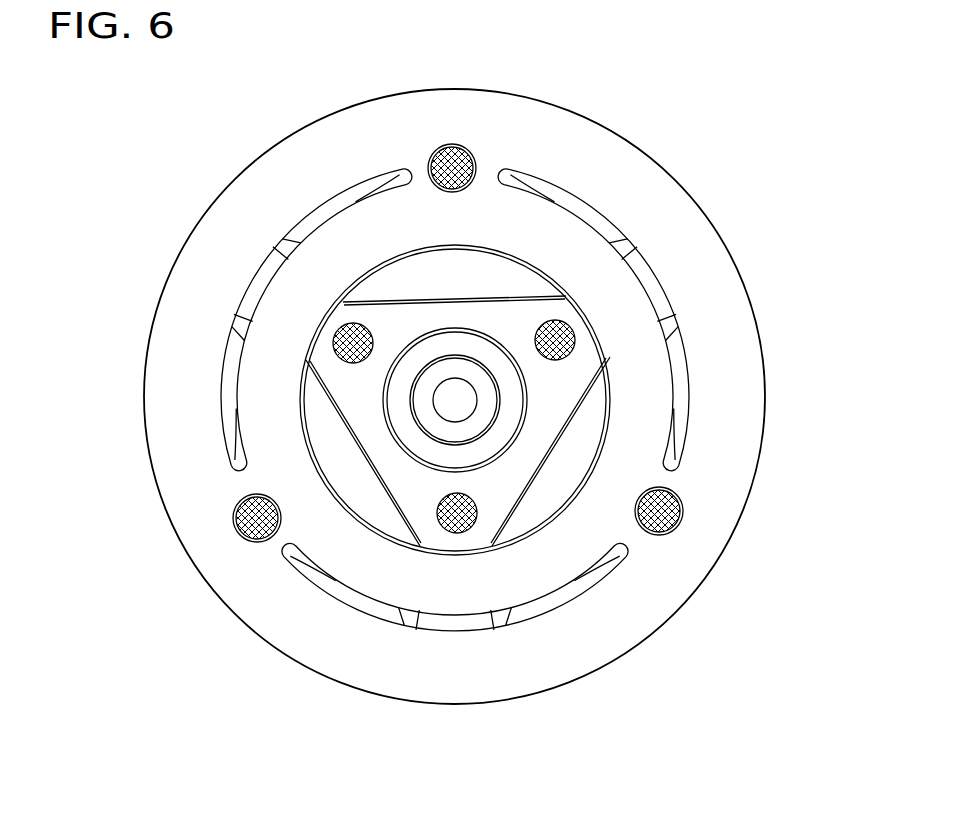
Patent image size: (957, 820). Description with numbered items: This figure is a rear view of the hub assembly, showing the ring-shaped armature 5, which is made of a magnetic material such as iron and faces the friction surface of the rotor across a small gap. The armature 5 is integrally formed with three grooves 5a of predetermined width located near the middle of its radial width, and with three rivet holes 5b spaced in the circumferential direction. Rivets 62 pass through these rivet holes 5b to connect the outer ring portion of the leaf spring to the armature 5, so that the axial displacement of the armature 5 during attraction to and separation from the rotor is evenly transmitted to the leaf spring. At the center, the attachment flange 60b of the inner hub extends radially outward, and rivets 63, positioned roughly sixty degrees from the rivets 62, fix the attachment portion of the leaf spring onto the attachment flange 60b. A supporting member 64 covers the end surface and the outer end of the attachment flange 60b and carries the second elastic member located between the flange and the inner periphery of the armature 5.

The armature 5 is at (705, 262).
The grooves 5a is at (298, 235).
The rivet holes 5b is at (477, 163).
The attachment flange 60b is at (503, 318).
The rivets 62 is at (452, 147).
The rivets 63 is at (567, 323).
The supporting member 64 is at (400, 290).